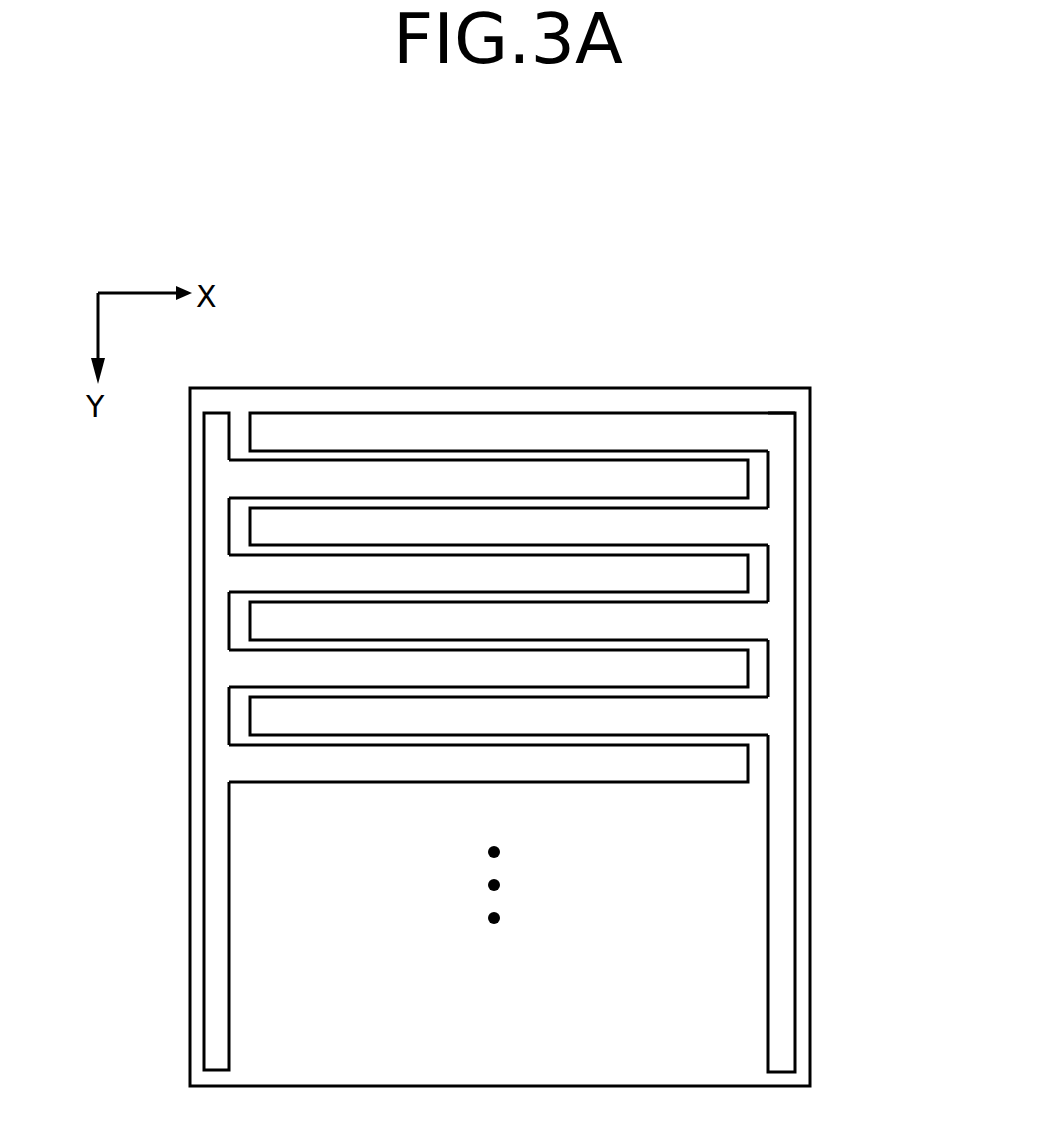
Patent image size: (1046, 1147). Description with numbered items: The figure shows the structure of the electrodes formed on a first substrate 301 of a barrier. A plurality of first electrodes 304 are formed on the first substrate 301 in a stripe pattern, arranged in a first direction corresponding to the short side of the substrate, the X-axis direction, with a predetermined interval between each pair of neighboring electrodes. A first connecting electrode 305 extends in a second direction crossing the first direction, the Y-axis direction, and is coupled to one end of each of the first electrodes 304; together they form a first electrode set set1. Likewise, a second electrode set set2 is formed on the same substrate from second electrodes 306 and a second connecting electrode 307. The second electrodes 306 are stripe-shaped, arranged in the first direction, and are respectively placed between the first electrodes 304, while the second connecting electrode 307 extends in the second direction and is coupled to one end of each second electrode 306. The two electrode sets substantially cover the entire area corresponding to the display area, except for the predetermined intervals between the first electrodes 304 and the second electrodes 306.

The first substrate 301 is at (836, 322).
The first electrodes 304 is at (431, 478).
The first connecting electrode 305 is at (217, 800).
The second electrodes 306 is at (643, 527).
The second connecting electrode 307 is at (780, 621).
The first electrode set set1 is at (408, 694).
The second electrode set set2 is at (590, 695).